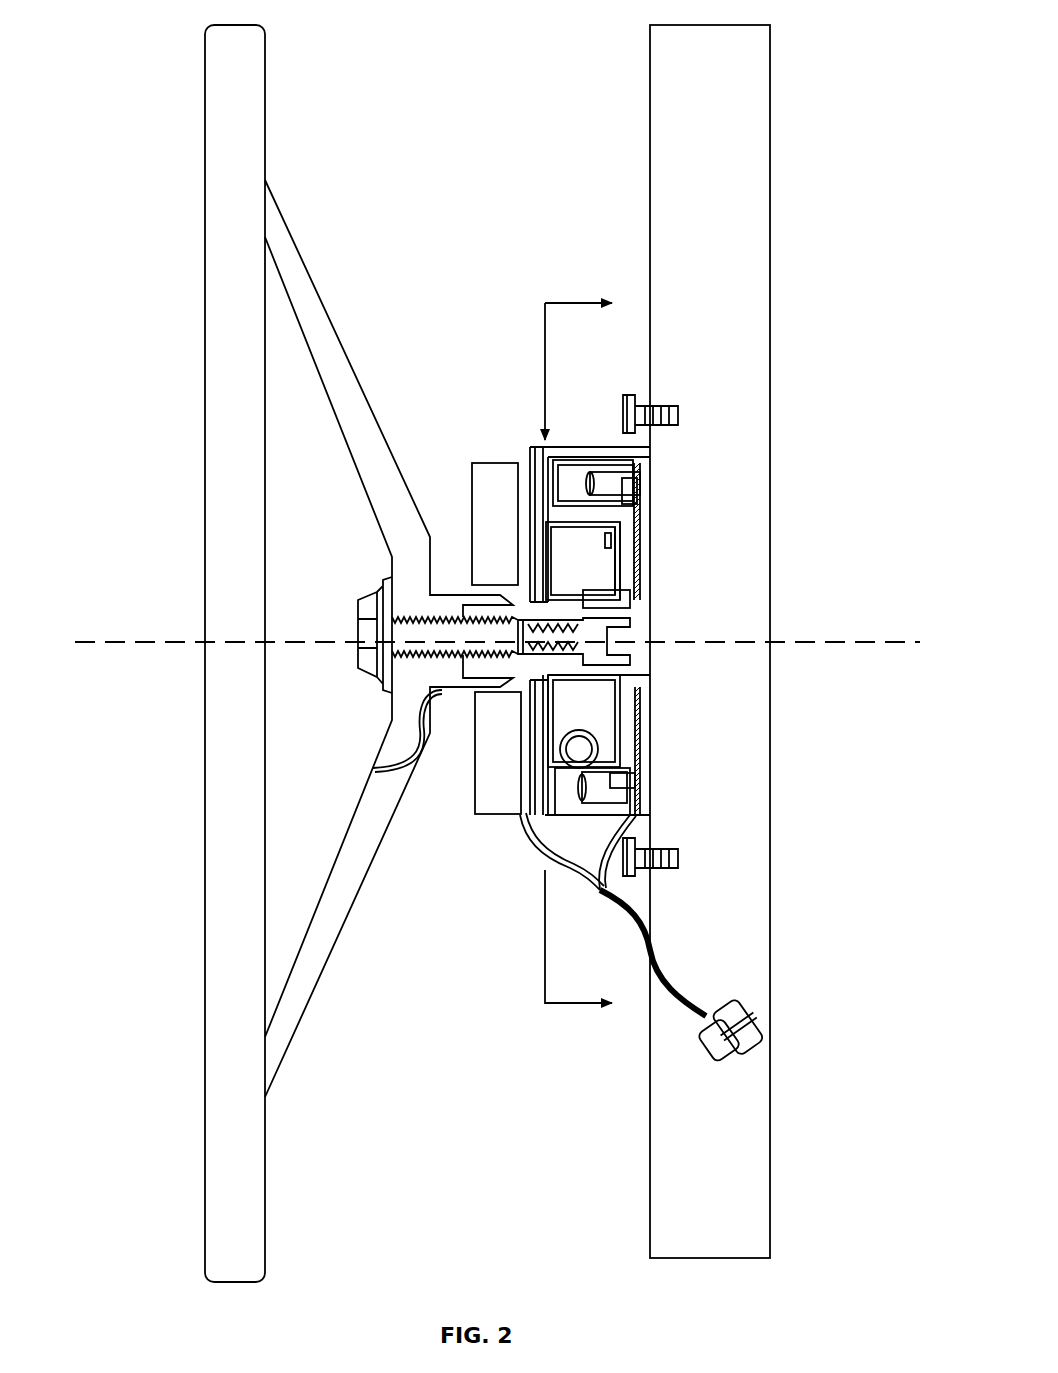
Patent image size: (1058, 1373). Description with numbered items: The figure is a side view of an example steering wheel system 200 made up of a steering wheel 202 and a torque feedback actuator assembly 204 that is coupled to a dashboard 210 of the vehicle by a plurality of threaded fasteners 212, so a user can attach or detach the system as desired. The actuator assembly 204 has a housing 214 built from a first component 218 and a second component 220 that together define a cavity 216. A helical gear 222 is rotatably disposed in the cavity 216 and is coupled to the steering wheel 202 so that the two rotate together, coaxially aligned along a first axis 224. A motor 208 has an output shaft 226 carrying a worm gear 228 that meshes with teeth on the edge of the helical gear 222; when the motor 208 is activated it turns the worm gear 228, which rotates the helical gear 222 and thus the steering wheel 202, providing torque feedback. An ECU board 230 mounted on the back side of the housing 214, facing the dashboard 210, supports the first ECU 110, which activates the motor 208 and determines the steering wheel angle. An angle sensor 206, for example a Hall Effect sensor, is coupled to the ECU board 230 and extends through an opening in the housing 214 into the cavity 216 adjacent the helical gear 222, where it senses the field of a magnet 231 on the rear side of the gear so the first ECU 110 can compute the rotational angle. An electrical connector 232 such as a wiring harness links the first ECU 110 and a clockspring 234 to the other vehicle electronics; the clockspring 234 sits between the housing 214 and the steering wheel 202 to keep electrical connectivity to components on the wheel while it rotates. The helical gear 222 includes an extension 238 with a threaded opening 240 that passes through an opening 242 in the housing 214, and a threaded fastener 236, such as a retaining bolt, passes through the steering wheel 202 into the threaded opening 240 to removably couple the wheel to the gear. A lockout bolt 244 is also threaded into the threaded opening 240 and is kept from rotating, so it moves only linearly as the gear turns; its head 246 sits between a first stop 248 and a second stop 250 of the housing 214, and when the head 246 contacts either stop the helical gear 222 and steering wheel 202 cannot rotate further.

The steering wheel system 200 is at (103, 25).
The steering wheel 202 is at (221, 100).
The torque feedback actuator assembly 204 is at (499, 377).
The angle sensor 206 is at (640, 538).
The motor 208 is at (574, 800).
The dashboard 210 is at (667, 119).
The threaded fasteners 212 is at (628, 406).
The housing 214 is at (632, 571).
The cavity 216 is at (630, 584).
The first component 218 is at (553, 452).
The second component 220 is at (539, 462).
The helical gear 222 is at (602, 706).
The first axis 224 is at (119, 639).
The output shaft 226 is at (582, 749).
The worm gear 228 is at (586, 733).
The ECU board 230 is at (642, 508).
The magnet 231 is at (606, 534).
The electrical connector 232 is at (756, 1020).
The clockspring 234 is at (496, 486).
The threaded fastener 236 is at (369, 614).
The extension 238 is at (518, 664).
The threaded opening 240 is at (481, 676).
The opening 242 is at (533, 603).
The lockout bolt 244 is at (526, 596).
The head 246 is at (604, 641).
The first stop 248 is at (623, 658).
The second stop 250 is at (633, 621).
The first ECU 110 is at (645, 484).